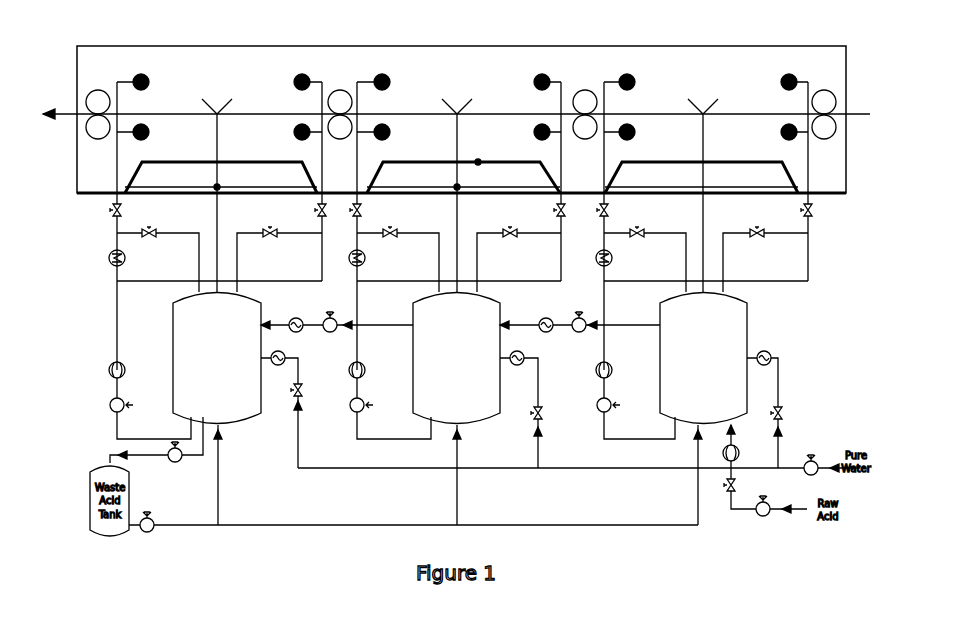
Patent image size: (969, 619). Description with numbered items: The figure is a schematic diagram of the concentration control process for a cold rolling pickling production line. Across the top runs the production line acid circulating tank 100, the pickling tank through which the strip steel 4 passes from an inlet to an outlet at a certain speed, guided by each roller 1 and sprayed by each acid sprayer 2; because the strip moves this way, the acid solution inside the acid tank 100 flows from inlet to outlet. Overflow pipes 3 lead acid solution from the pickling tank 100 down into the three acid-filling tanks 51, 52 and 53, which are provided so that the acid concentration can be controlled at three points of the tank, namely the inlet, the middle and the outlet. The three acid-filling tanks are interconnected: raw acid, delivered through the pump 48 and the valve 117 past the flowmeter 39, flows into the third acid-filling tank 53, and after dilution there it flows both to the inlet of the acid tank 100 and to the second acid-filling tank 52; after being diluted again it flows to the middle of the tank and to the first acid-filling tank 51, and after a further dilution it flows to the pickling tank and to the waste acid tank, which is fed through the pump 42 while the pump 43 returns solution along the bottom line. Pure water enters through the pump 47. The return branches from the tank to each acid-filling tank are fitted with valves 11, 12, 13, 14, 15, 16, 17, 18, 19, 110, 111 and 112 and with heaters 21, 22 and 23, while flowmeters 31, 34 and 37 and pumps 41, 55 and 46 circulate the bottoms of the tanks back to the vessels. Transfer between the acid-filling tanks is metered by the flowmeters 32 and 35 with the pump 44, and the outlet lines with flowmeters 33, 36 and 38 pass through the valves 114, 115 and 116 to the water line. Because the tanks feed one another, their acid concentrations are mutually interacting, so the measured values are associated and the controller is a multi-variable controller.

The production line acid circulating tank 100 is at (488, 103).
The roller 1 is at (98, 90).
The acid sprayer 2 is at (146, 76).
The overflow pipe 3 is at (208, 103).
The strip steel 4 is at (402, 113).
The valve 11 is at (106, 212).
The valve 12 is at (149, 224).
The valve 13 is at (269, 224).
The valve 14 is at (309, 210).
The valve 15 is at (364, 210).
The valve 16 is at (392, 224).
The valve 17 is at (509, 224).
The valve 18 is at (549, 210).
The valve 19 is at (611, 210).
The valve 110 is at (638, 223).
The valve 111 is at (757, 222).
The valve 112 is at (822, 210).
The heater 21 is at (107, 259).
The heater 22 is at (376, 259).
The heater 23 is at (623, 259).
The flowmeter 31 is at (105, 370).
The flowmeter 32 is at (299, 314).
The flowmeter 33 is at (280, 351).
The flowmeter 34 is at (368, 370).
The flowmeter 35 is at (547, 317).
The flowmeter 36 is at (520, 350).
The flowmeter 37 is at (616, 370).
The flowmeter 38 is at (771, 350).
The flowmeter 39 is at (741, 447).
The pump 41 is at (109, 405).
The pump 42 is at (175, 458).
The pump 43 is at (148, 513).
The pump 44 is at (330, 330).
The pump 46 is at (618, 405).
The pump 47 is at (811, 455).
The pump 48 is at (764, 515).
The pump 55 is at (369, 405).
The acid-filling tank 51 is at (217, 358).
The acid-filling tank 52 is at (456, 358).
The acid-filling tank 53 is at (703, 358).
The valve 114 is at (309, 393).
The valve 115 is at (552, 419).
The valve 116 is at (792, 409).
The valve 117 is at (742, 485).